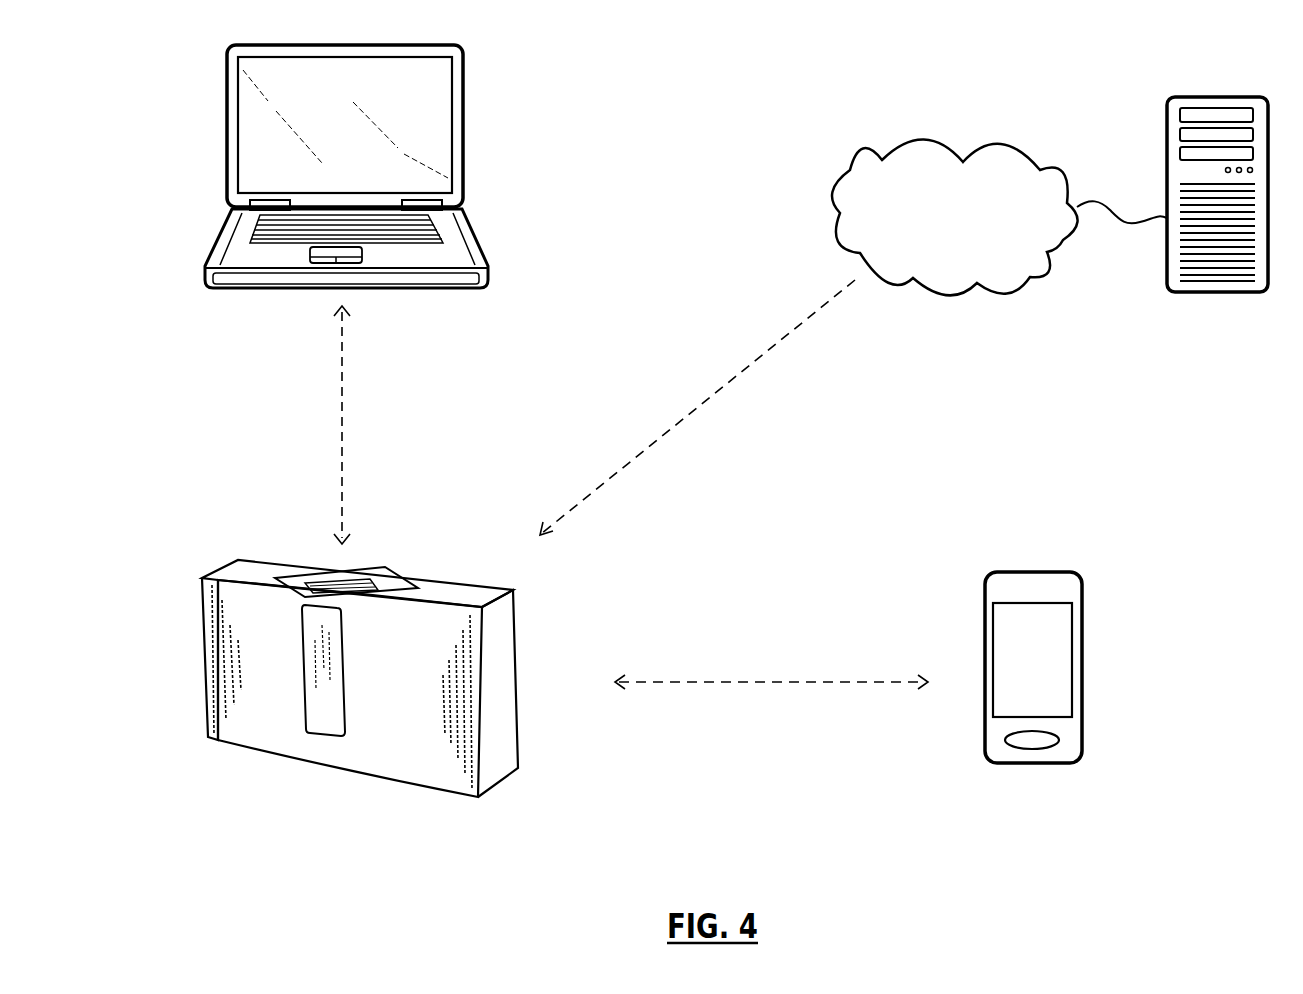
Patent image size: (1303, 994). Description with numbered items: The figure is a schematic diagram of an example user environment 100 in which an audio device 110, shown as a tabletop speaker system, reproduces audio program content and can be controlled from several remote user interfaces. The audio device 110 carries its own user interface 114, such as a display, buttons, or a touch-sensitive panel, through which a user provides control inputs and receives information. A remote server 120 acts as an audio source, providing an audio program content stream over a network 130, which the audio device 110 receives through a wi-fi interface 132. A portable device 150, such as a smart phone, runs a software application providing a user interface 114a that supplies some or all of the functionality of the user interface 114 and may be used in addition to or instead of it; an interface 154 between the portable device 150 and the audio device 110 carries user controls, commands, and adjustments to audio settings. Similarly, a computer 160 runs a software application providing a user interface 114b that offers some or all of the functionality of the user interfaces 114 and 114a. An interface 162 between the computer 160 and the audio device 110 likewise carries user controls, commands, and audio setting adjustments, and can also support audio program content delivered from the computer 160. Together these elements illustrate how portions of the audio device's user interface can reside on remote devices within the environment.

The user environment 100 is at (757, 117).
The audio device 110 is at (207, 660).
The user interface 114 is at (380, 587).
The user interface 114a is at (1062, 638).
The user interface 114b is at (437, 95).
The remote server 120 is at (1215, 96).
The network 130 is at (991, 146).
The wi-fi interface 132 is at (697, 407).
The portable device 150 is at (1032, 765).
The interface 154 is at (771, 667).
The computer 160 is at (466, 140).
The interface 162 is at (366, 425).